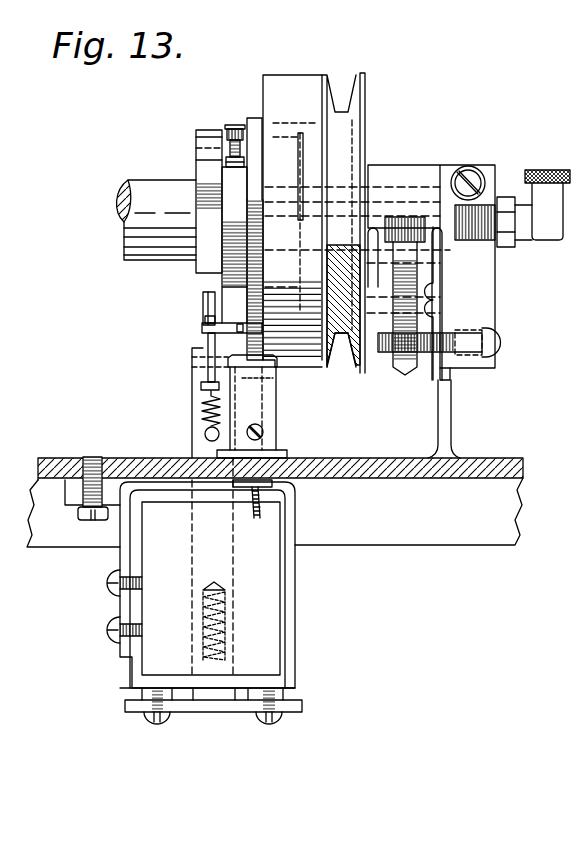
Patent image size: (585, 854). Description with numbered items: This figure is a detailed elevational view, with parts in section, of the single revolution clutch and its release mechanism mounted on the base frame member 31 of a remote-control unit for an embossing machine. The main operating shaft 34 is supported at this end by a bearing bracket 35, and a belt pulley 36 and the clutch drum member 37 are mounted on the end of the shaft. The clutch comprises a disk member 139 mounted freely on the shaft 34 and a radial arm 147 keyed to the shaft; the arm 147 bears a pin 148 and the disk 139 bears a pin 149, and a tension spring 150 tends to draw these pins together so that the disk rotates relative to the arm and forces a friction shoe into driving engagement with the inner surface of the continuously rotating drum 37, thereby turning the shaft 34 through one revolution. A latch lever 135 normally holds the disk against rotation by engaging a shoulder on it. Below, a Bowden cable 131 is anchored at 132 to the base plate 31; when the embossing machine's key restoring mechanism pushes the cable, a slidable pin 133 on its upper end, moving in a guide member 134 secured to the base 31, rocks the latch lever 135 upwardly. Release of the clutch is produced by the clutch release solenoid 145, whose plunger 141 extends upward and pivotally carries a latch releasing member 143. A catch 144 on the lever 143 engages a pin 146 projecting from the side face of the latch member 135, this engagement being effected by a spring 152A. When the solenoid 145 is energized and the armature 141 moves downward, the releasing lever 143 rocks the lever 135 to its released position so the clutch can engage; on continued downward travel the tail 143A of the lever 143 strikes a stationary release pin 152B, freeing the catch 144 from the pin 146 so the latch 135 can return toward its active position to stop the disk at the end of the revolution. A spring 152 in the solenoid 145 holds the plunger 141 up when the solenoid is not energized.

The base frame member 31 is at (68, 446).
The main operating shaft 34 is at (388, 187).
The bearing bracket 35 is at (496, 290).
The belt pulley 36 is at (349, 84).
The clutch mechanism 37 is at (298, 74).
The Bowden cable 131 is at (255, 514).
The anchor 132 is at (272, 483).
The slidable pin 133 is at (276, 386).
The guide member 134 is at (278, 418).
The latch lever 135 is at (262, 340).
The disk member 139 is at (255, 117).
The plunger 141 is at (191, 440).
The latch releasing member 143 is at (203, 302).
The tail 143A is at (207, 360).
The catch 144 is at (204, 318).
The clutch release solenoid 145 is at (277, 619).
The pin 146 is at (203, 328).
The radial arm 147 is at (221, 143).
The pin 148 is at (197, 171).
The pin 149 is at (238, 128).
The tension spring 150 is at (227, 128).
The spring 152 is at (225, 628).
The spring 152A is at (203, 412).
The release pin 152B is at (203, 387).